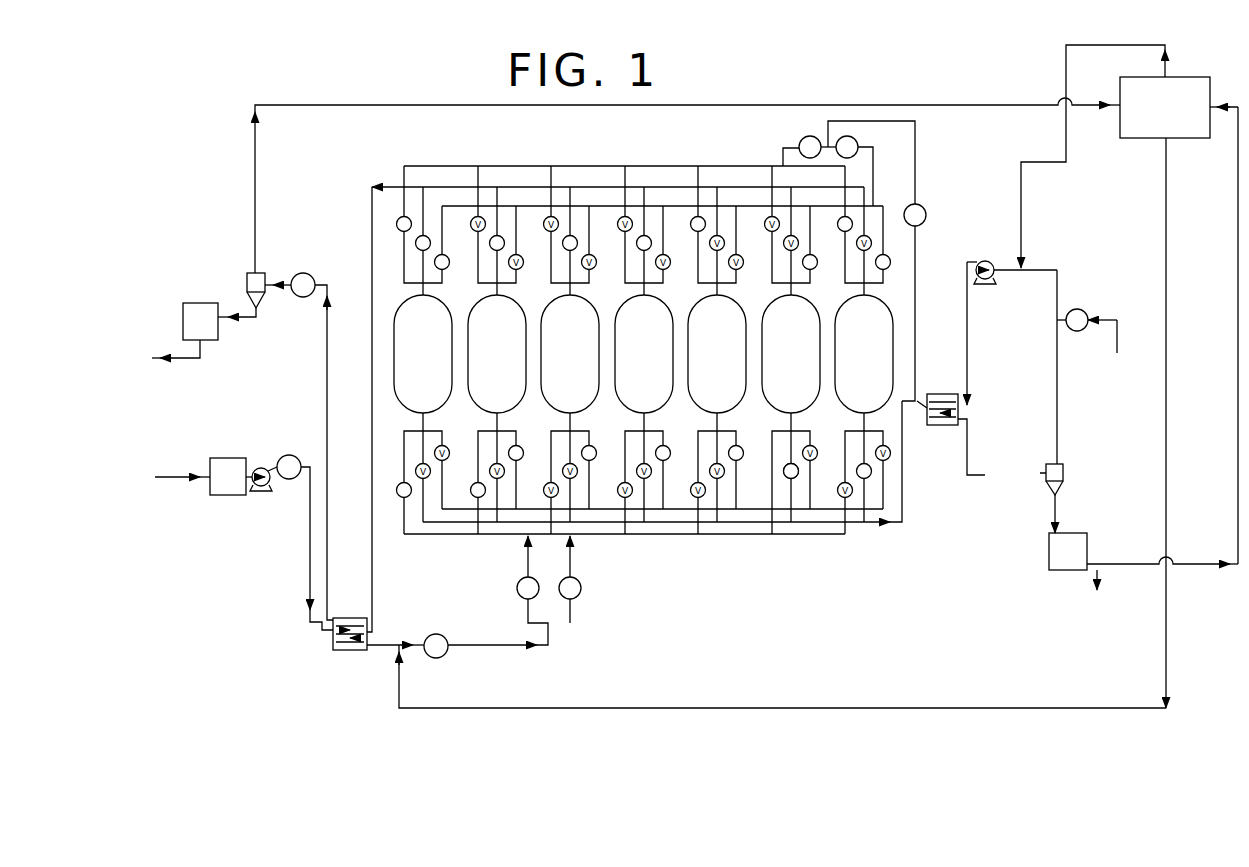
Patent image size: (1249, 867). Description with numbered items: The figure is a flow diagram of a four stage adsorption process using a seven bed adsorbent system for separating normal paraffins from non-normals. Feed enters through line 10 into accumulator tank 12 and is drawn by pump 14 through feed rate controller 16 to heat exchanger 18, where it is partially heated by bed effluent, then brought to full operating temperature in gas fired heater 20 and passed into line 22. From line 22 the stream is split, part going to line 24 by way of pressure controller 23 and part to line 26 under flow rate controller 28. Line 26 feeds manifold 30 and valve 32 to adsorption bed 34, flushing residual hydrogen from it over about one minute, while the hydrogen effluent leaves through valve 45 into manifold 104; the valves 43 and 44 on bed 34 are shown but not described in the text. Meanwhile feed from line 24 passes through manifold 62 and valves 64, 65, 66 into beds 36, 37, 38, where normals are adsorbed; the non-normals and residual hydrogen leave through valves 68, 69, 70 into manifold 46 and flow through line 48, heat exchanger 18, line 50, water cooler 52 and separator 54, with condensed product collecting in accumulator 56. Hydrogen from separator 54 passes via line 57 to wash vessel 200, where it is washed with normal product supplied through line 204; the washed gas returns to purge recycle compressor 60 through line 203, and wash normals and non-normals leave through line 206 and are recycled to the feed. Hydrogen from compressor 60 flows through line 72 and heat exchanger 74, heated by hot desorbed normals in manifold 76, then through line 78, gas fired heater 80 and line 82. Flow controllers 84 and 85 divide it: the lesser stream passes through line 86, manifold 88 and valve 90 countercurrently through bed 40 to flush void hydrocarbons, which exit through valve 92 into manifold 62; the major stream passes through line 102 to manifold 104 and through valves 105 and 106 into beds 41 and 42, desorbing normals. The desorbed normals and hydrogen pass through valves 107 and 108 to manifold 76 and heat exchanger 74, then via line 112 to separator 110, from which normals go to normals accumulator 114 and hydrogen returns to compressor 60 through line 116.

The feed line 10 is at (186, 480).
The accumulator tank 12 is at (214, 458).
The pump 14 is at (261, 468).
The feed rate controller 16 is at (290, 455).
The heat exchanger 18 is at (356, 618).
The gas fired heater 20 is at (430, 636).
The line 22 is at (515, 645).
The pressure controller 23 is at (518, 595).
The line 24 is at (528, 568).
The line 26 is at (572, 553).
The flow rate controller 28 is at (582, 591).
The manifold 30 is at (428, 540).
The valve 32 is at (400, 496).
The adsorption bed 34 is at (400, 314).
The adsorption bed 36 is at (474, 313).
The adsorption bed 37 is at (548, 311).
The adsorption bed 38 is at (622, 311).
The adsorption bed 40 is at (696, 311).
The adsorption bed 41 is at (769, 311).
The adsorption bed 42 is at (843, 311).
The effluent valve 43 is at (397, 222).
The non-normals outlet valve 44 is at (415, 247).
The valve 45 is at (448, 267).
The manifold 46 is at (506, 187).
The line 48 is at (372, 364).
The line 50 is at (327, 364).
The water cooler 52 is at (311, 275).
The separator 54 is at (256, 273).
The accumulator 56 is at (190, 303).
The line 57 is at (258, 164).
The purge recycle compressor 60 is at (984, 261).
The manifold 62 is at (459, 507).
The valve 64 is at (535, 462).
The valve 65 is at (608, 462).
The valve 66 is at (682, 462).
The valve 68 is at (489, 244).
The valve 69 is at (562, 244).
The valve 70 is at (636, 244).
The line 72 is at (968, 337).
The heat exchanger 74 is at (937, 394).
The manifold 76 is at (461, 540).
The line 78 is at (917, 320).
The gas fired heater 80 is at (923, 208).
The line 82 is at (915, 143).
The flow controller 84 is at (805, 137).
The flow controller 85 is at (856, 139).
The line 86 is at (783, 153).
The manifold 88 is at (516, 166).
The valve 90 is at (691, 226).
The valve 92 is at (755, 462).
The line 102 is at (873, 180).
The manifold 104 is at (829, 212).
The valve 105 is at (816, 267).
The valve 106 is at (889, 266).
The valve 107 is at (785, 470).
The valve 108 is at (857, 470).
The separator 110 is at (1063, 465).
The line 112 is at (980, 478).
The normals accumulator 114 is at (1049, 547).
The line 116 is at (1058, 410).
The wash vessel 200 is at (1196, 77).
The line 203 is at (1022, 218).
The line 204 is at (1238, 240).
The line 206 is at (615, 708).